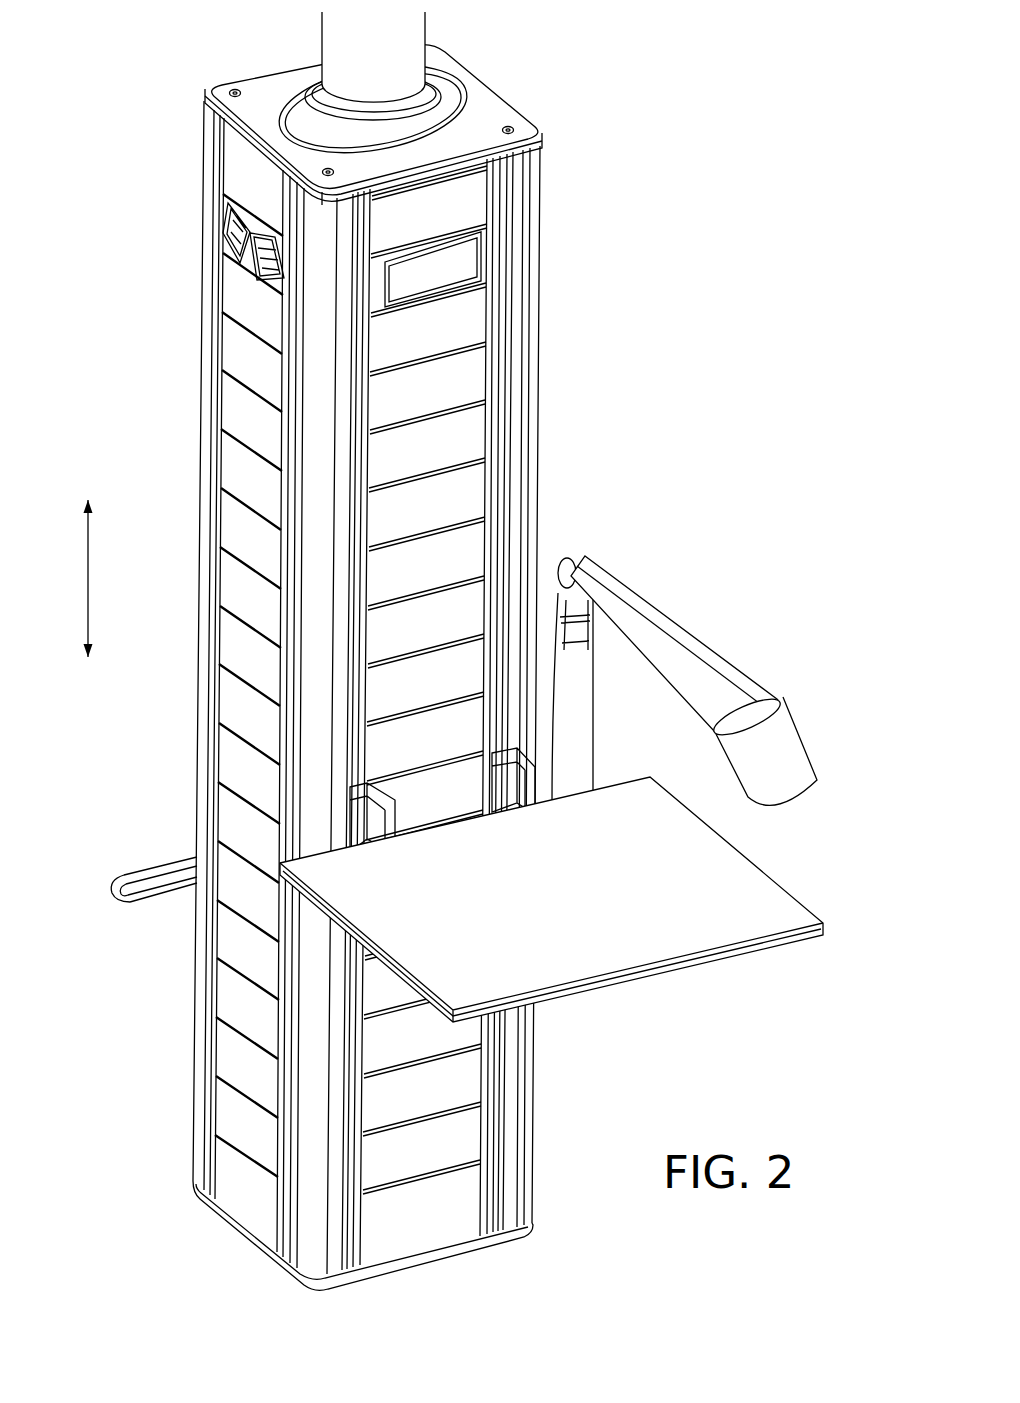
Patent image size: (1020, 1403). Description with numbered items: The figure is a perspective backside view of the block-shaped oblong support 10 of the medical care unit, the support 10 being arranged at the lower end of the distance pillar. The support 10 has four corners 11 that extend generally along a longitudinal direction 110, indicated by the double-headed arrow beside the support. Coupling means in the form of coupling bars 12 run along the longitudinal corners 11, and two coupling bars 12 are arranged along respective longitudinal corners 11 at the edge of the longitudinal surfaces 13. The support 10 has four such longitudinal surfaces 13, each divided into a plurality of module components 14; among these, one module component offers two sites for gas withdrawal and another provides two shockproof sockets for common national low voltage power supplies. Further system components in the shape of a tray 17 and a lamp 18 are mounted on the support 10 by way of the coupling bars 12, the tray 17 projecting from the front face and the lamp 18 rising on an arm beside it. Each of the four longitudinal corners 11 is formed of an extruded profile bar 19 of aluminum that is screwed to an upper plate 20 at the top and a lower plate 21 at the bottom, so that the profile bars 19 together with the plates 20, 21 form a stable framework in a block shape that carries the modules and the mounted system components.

The block-shaped oblong support 10 is at (623, 332).
The corners 11 is at (200, 288).
The coupling bars 12 is at (282, 492).
The longitudinal surfaces 13 is at (233, 845).
The module components 14 is at (232, 1062).
The tray 17 is at (570, 926).
The lamp 18 is at (772, 692).
The extruded profile bar 19 is at (523, 1107).
The upper plate 20 is at (485, 110).
The lower plate 21 is at (490, 1247).
The longitudinal direction 110 is at (85, 570).